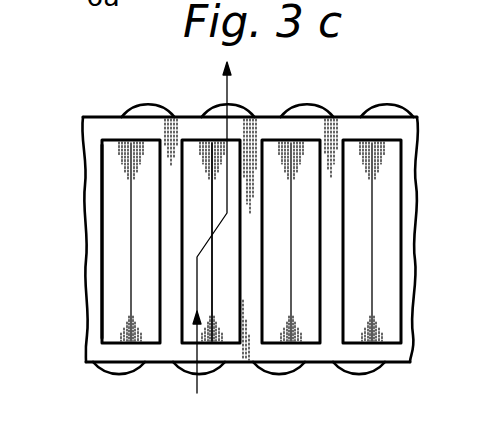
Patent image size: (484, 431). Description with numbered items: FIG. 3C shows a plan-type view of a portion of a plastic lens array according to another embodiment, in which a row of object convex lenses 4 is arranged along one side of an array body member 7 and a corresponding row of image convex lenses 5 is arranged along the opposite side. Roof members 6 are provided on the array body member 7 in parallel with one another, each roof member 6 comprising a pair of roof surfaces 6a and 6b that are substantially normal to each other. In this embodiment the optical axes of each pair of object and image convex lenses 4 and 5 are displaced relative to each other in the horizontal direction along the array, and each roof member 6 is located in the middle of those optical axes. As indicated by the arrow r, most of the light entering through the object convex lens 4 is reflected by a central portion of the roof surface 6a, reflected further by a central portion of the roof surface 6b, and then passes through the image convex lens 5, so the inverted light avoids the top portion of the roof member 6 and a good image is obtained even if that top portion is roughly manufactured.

The object convex lens 4 is at (112, 370).
The image convex lens 5 is at (152, 107).
The roof member 6 is at (102, 172).
The roof surface 6a is at (113, 200).
The roof surface 6b is at (143, 229).
The array body member 7 is at (92, 319).
The arrow r is at (212, 238).